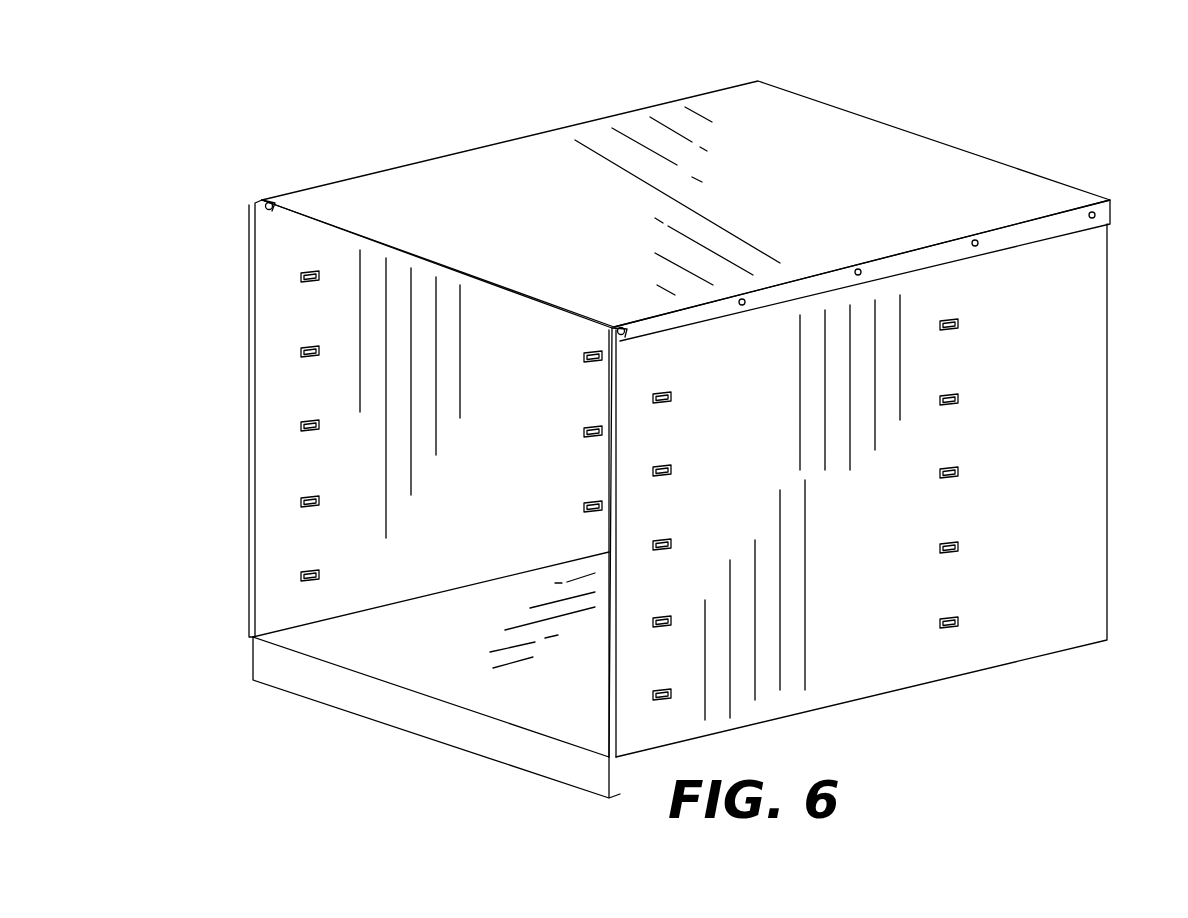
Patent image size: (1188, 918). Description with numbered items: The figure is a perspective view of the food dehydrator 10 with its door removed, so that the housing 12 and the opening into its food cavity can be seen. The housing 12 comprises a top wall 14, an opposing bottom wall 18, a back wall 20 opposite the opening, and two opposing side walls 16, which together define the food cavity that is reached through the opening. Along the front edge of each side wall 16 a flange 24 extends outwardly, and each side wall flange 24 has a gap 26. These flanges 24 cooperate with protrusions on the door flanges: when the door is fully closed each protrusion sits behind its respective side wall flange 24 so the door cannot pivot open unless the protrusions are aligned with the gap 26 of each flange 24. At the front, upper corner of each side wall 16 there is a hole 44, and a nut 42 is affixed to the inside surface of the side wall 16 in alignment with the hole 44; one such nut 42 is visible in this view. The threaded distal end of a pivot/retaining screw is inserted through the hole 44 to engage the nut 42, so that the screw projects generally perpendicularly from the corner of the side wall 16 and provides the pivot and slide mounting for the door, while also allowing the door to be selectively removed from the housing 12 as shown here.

The food dehydrator 10 is at (236, 99).
The housing 12 is at (1108, 265).
The top wall 14 is at (803, 118).
The side walls 16 is at (275, 480).
The bottom wall 18 is at (565, 718).
The back wall 20 is at (1113, 354).
The side wall flange 24 is at (250, 412).
The gap 26 is at (253, 577).
The nut 42 is at (268, 210).
The hole 44 is at (620, 327).